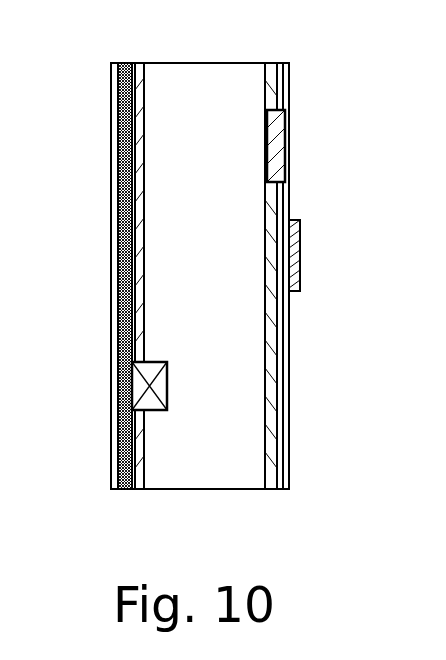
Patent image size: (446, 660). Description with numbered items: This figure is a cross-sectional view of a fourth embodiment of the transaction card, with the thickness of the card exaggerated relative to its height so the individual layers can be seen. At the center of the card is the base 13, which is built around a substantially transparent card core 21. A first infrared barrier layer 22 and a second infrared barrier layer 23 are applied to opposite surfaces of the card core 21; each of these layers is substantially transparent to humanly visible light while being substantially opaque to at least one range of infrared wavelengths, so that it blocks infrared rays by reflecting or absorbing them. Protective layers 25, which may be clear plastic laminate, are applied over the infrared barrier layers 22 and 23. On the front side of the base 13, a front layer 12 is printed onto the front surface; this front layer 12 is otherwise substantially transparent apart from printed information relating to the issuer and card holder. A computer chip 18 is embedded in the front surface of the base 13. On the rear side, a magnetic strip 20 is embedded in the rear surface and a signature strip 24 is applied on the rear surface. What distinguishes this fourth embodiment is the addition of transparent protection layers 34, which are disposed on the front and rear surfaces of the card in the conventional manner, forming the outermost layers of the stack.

The front layer 12 is at (125, 489).
The base 13 is at (175, 63).
The computer chip 18 is at (145, 410).
The magnetic strip 20 is at (280, 130).
The card core 21 is at (203, 487).
The first infrared barrier layer 22 is at (138, 489).
The second infrared barrier layer 23 is at (270, 488).
The signature strip 24 is at (298, 258).
The protective layers 25 is at (128, 63).
The transparent protection layers 34 is at (112, 320).